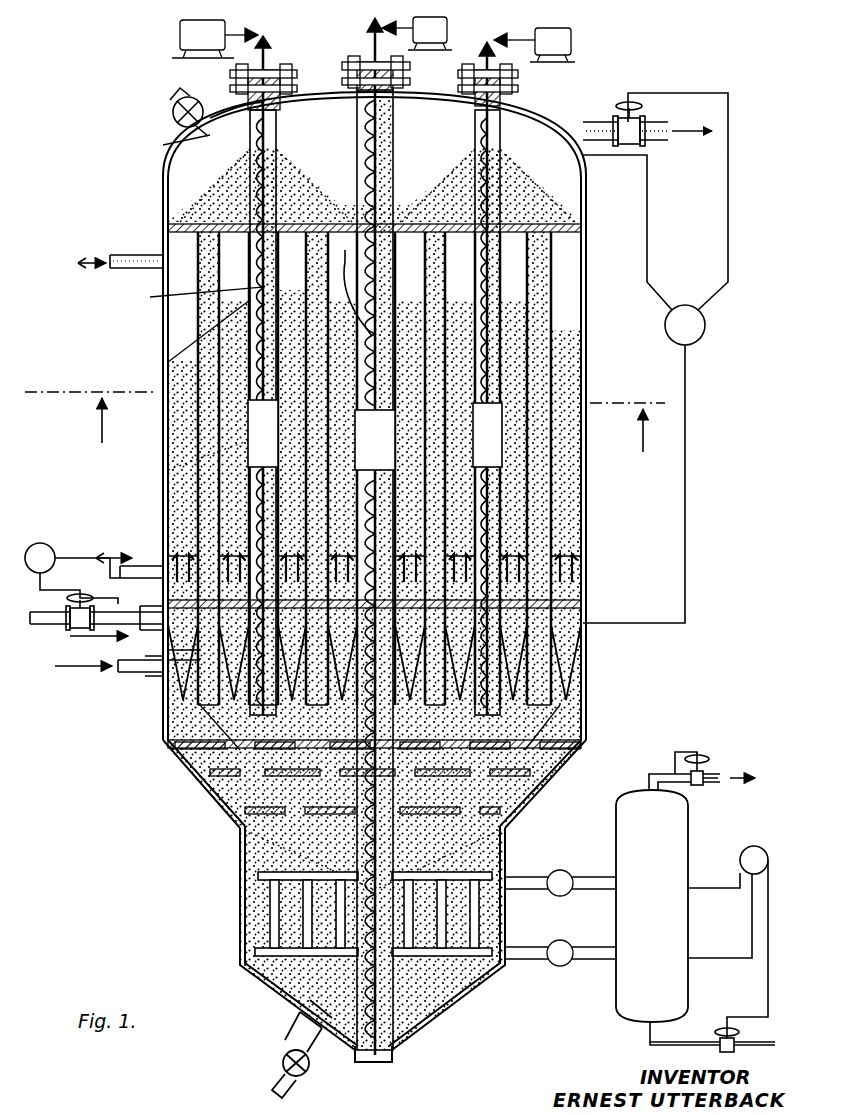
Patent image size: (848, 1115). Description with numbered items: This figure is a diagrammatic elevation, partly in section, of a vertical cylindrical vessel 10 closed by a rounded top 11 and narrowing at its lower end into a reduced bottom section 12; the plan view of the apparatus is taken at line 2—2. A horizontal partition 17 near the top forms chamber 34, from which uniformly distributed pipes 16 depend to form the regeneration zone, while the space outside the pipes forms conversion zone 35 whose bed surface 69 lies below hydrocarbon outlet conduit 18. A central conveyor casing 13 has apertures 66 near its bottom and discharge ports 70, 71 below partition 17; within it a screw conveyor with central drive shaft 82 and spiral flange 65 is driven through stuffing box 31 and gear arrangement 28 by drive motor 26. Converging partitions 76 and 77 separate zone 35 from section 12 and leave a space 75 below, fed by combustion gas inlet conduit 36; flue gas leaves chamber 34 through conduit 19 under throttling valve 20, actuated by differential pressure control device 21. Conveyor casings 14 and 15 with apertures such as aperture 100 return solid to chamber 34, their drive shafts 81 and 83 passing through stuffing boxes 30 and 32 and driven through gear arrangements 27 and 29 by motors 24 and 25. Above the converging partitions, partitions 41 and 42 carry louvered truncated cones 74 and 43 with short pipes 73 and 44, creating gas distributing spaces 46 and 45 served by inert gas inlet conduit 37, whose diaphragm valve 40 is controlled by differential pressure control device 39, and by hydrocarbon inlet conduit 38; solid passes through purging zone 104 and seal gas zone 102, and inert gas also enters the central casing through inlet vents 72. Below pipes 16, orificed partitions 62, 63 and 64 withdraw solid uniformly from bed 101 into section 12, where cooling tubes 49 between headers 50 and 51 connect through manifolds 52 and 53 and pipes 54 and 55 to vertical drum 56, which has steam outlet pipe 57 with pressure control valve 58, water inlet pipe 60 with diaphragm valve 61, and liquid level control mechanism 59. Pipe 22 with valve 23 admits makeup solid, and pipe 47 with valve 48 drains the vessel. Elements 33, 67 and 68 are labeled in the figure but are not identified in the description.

The section line 2 is at (345, 422).
The vertical cylindrical vessel 10 is at (166, 362).
The rounded top 11 is at (236, 118).
The reduced bottom section 12 is at (242, 940).
The conveyor casing 13 is at (360, 852).
The conveyor casing 14 is at (190, 295).
The conveyor casing 15 is at (500, 318).
The pipes 16 is at (597, 372).
The partition 17 is at (178, 206).
The hydrocarbon outlet conduit 18 is at (138, 254).
The flue gas outlet conduit 19 is at (600, 124).
The throttling valve 20 is at (643, 118).
The differential pressure control device 21 is at (700, 318).
The pipe 22 is at (170, 145).
The valve 23 is at (173, 120).
The motor 24 is at (180, 28).
The motor 25 is at (571, 36).
The drive motor 26 is at (447, 26).
The gear arrangement 27 is at (264, 36).
The gear arrangement 28 is at (362, 19).
The gear arrangement 29 is at (494, 32).
The stuffing box 30 is at (283, 88).
The stuffing box 31 is at (412, 82).
The stuffing box 32 is at (505, 98).
The catalyst heap 33 is at (342, 170).
The chamber 34 is at (566, 203).
The conversion zone 35 is at (232, 480).
The combustion gas inlet conduit 36 is at (138, 676).
The inert gas inlet conduit 37 is at (140, 622).
The hydrocarbon inlet conduit 38 is at (105, 547).
The differential pressure control device 39 is at (72, 573).
The diaphragm valve 40 is at (66, 602).
The partition 41 is at (570, 628).
The partition 42 is at (570, 570).
The louvered truncated cone 43 is at (578, 556).
The short pipe 44 is at (572, 590).
The gas distributing space 45 is at (575, 604).
The gas distributing space 46 is at (576, 652).
The pipe 47 is at (295, 1045).
The valve 48 is at (303, 1074).
The cooling tubes 49 is at (300, 908).
The header 50 is at (526, 877).
The header 51 is at (526, 947).
The manifold 52 is at (572, 872).
The manifold 53 is at (580, 936).
The pipe 54 is at (603, 894).
The pipe 55 is at (596, 966).
The vertical drum 56 is at (678, 864).
The outlet pipe 57 is at (648, 778).
The pressure control valve 58 is at (694, 786).
The liquid level control mechanism 59 is at (756, 846).
The inlet pipe 60 is at (704, 1044).
The diaphragm valve 61 is at (740, 1036).
The partition 62 is at (560, 752).
The partition 63 is at (540, 782).
The partition 64 is at (518, 812).
The spiral flange 65 is at (440, 1010).
The apertures 66 is at (400, 1040).
The right screw conveyor 67 is at (500, 258).
The left screw conveyor 68 is at (262, 135).
The surface 69 is at (178, 355).
The discharge port 70 is at (384, 262).
The discharge port 71 is at (351, 290).
The inlet vents 72 is at (330, 618).
The pipes 73 is at (234, 618).
The louvered truncated cone 74 is at (182, 618).
The space 75 is at (200, 650).
The converging partition 76 is at (568, 672).
The converging partition 77 is at (405, 678).
The drive shaft 81 is at (268, 54).
The central drive shaft 82 is at (354, 34).
The drive shaft 83 is at (482, 60).
The aperture 100 is at (560, 700).
The bed 101 is at (170, 735).
The seal gas zone 102 is at (240, 695).
The purging zone 104 is at (586, 606).